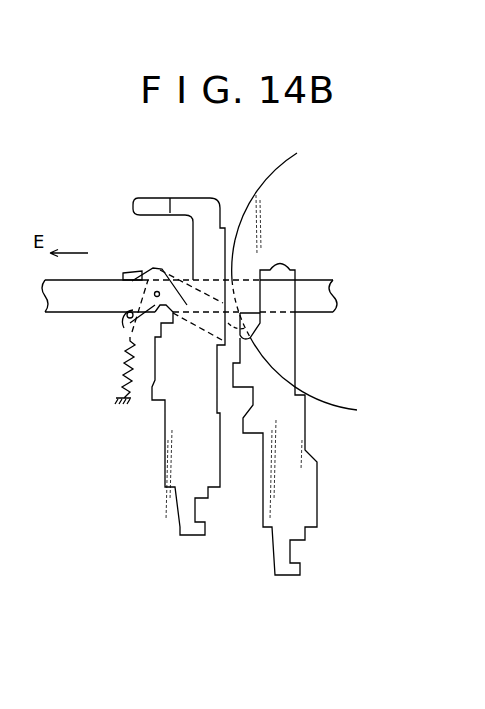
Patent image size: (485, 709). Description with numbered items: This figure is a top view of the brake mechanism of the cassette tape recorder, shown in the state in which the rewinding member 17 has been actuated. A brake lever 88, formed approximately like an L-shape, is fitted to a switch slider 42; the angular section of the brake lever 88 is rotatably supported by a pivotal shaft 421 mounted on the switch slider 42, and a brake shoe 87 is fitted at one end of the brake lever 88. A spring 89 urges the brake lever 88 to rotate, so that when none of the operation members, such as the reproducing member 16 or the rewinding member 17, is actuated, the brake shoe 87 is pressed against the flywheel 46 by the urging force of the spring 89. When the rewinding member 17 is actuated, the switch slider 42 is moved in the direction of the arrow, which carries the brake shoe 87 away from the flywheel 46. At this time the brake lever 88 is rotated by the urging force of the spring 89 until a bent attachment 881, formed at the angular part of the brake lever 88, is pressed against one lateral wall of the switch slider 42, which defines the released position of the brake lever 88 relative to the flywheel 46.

The switch slider 42 is at (62, 313).
The flywheel 46 is at (277, 178).
The rewinding member 17 is at (165, 450).
The reproducing member 16 is at (306, 497).
The brake shoe 87 is at (246, 330).
The pivotal shaft 421 is at (158, 291).
The bent attachment 881 is at (128, 272).
The brake lever 88 is at (127, 321).
The spring 89 is at (123, 373).